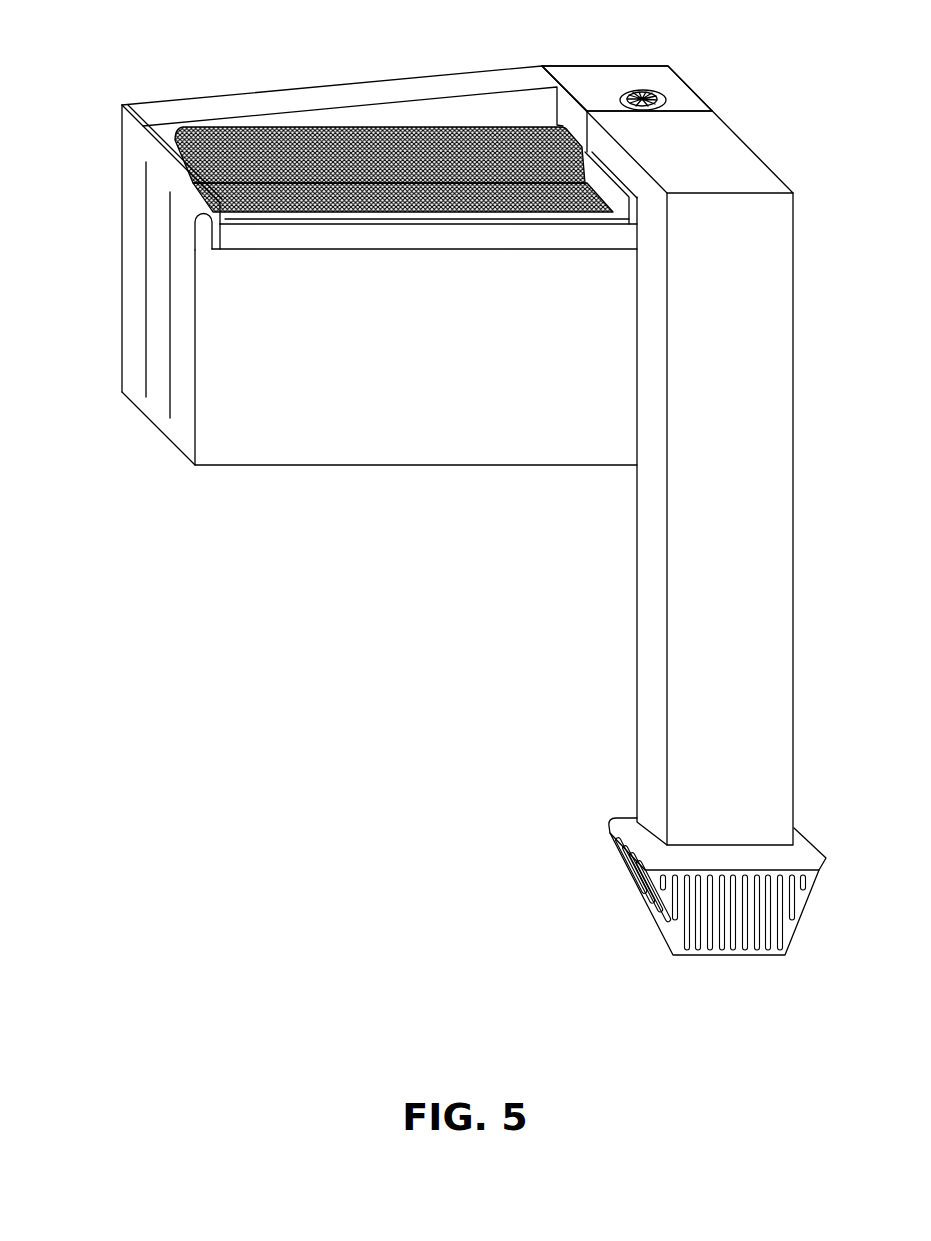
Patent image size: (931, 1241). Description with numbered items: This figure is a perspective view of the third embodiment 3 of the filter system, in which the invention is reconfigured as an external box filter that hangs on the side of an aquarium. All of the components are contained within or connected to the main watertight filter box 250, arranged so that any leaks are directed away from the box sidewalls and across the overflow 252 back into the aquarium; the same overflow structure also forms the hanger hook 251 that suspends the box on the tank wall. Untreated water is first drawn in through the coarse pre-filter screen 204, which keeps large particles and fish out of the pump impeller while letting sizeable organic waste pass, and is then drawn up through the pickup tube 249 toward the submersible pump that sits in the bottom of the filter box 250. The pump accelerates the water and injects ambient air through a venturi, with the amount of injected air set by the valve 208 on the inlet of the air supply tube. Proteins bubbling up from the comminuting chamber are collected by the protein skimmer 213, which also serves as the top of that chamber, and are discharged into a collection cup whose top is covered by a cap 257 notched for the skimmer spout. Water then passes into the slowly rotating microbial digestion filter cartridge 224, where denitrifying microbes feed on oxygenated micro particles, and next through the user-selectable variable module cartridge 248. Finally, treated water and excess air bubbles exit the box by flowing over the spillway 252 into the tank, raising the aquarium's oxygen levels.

The third embodiment 3 is at (753, 131).
The coarse pre-filter screen 204 is at (620, 878).
The valve 208 is at (650, 93).
The protein skimmer 213 is at (338, 81).
The microbial digestion filter cartridge 224 is at (153, 135).
The variable module cartridge 248 is at (213, 193).
The pickup tube 249 is at (637, 602).
The filter box 250 is at (310, 466).
The hanger hook 251 is at (215, 257).
The overflow 252 is at (226, 218).
The cap 257 is at (608, 65).